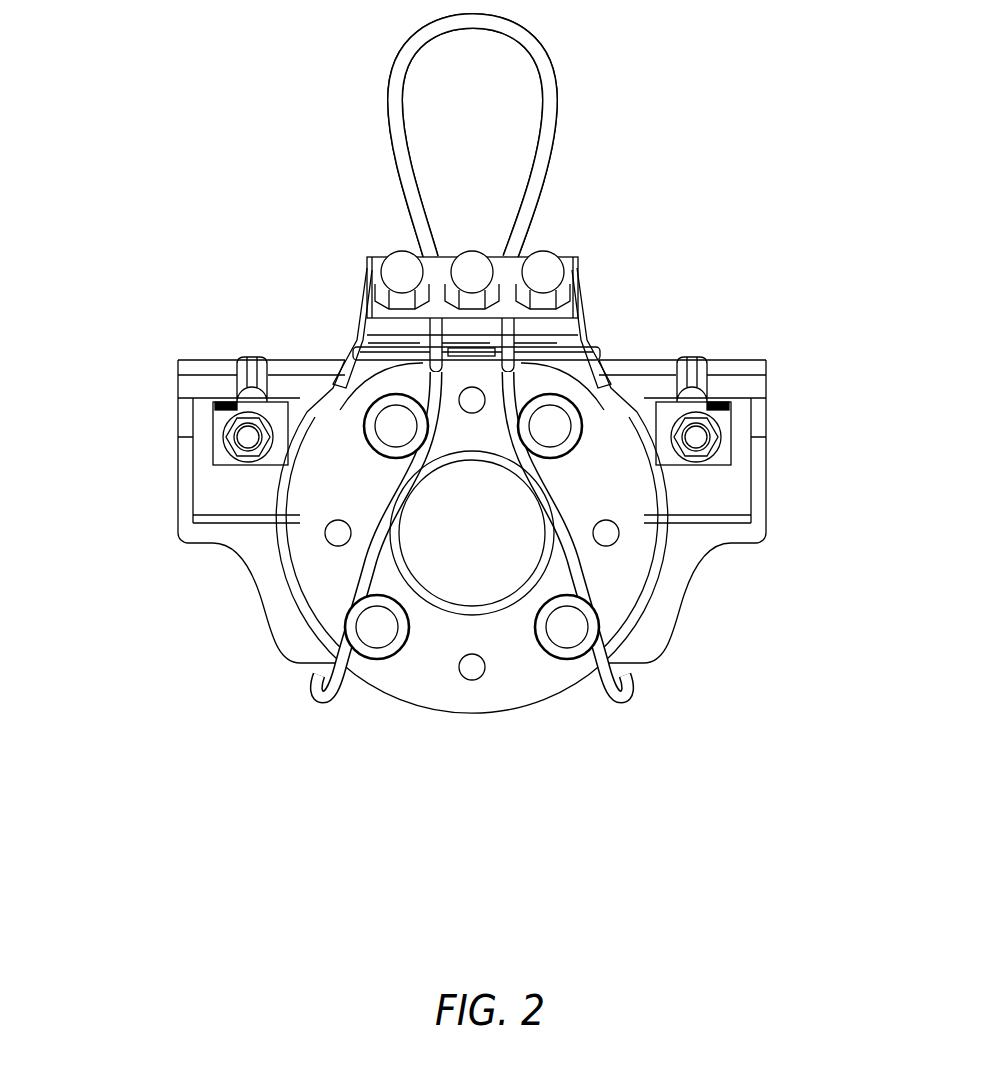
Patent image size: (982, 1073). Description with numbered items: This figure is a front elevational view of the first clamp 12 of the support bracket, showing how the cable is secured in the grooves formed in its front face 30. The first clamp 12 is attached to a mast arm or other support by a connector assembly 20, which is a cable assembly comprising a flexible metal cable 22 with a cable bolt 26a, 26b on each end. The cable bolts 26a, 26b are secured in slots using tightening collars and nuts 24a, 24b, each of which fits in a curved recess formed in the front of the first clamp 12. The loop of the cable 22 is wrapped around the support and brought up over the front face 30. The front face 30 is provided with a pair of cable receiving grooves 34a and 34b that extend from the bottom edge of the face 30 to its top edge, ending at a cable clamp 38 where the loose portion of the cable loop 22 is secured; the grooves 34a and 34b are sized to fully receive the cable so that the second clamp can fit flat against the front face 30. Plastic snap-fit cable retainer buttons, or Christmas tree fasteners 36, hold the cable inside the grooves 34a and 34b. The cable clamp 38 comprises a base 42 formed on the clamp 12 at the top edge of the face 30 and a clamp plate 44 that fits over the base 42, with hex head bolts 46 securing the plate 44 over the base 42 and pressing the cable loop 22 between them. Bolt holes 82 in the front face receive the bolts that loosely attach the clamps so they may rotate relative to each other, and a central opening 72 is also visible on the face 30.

The first clamp 12 is at (735, 177).
The connector assembly 20 is at (547, 163).
The flexible metal cable 22 is at (547, 117).
The tightening collar and nut 24a is at (220, 458).
The tightening collar and nut 24b is at (730, 423).
The cable bolt 26a is at (250, 365).
The cable bolt 26b is at (695, 362).
The front face 30 is at (510, 668).
The cable receiving groove 34a is at (368, 570).
The cable receiving groove 34b is at (583, 572).
The snap-fit cable retainer button 36 is at (396, 426).
The cable clamp 38 is at (583, 265).
The base 42 is at (590, 330).
The clamp plate 44 is at (375, 311).
The hex head bolt 46 is at (540, 270).
The central opening 72 is at (457, 583).
The bolt hole 82 is at (338, 533).